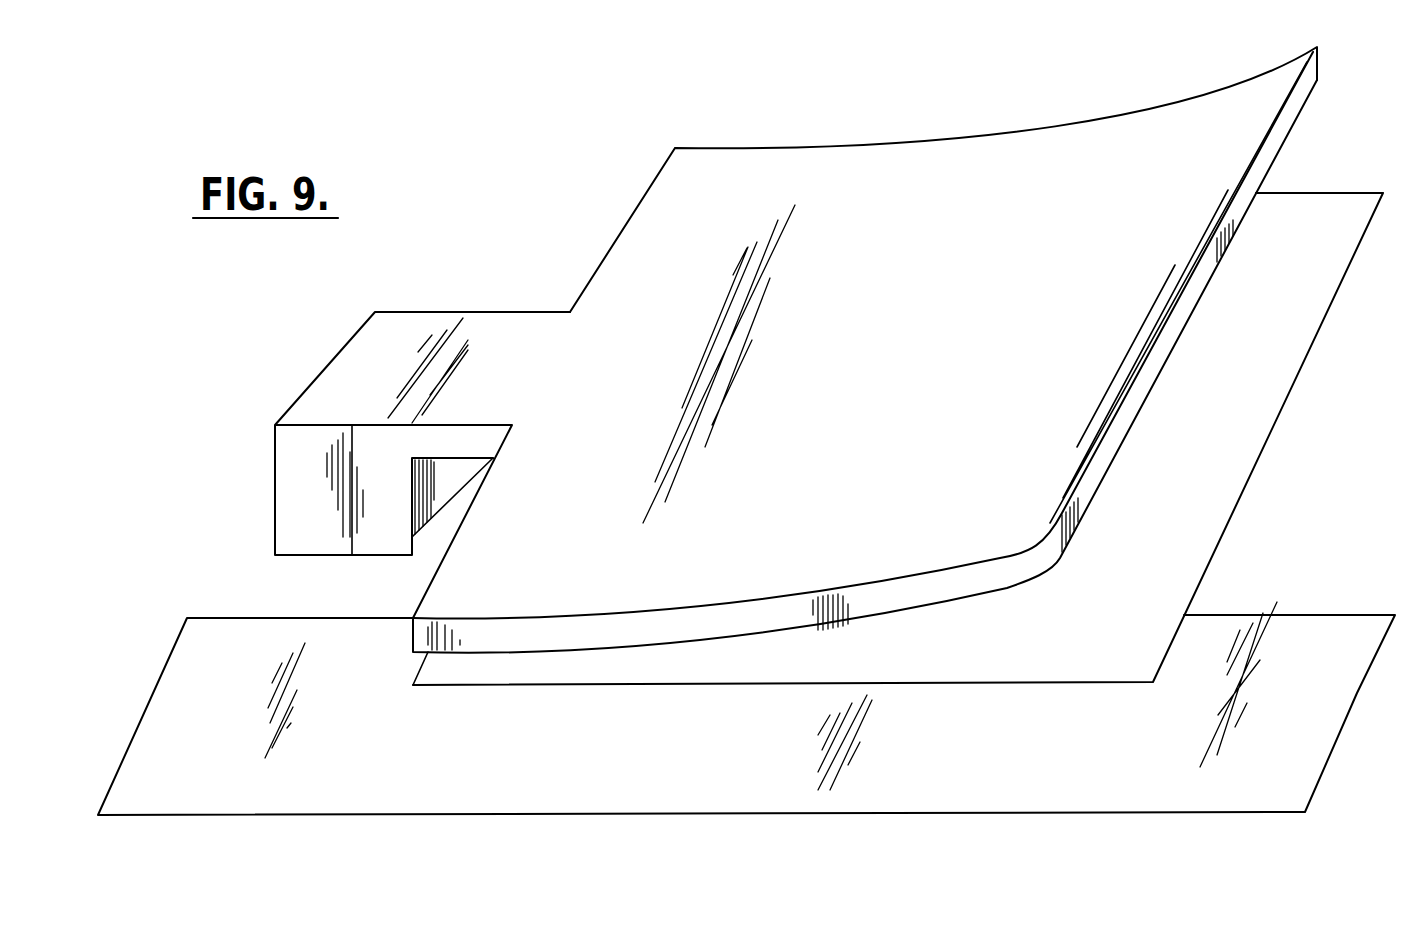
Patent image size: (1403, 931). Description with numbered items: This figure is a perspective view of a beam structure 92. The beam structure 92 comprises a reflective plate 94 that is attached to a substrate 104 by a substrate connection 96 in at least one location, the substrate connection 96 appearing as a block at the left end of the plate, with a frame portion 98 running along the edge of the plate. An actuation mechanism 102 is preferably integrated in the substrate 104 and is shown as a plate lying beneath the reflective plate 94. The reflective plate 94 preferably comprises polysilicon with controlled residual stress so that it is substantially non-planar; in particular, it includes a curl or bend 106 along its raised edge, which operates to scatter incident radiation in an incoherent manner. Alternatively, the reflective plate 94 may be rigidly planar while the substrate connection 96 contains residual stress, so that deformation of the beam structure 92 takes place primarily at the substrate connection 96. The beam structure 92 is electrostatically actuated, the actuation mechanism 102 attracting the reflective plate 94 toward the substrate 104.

The beam structure 92 is at (756, 334).
The reflective plate 94 is at (933, 163).
The substrate connection 96 is at (303, 490).
The frame strip 98 is at (512, 328).
The actuation mechanism 102 is at (1182, 552).
The substrate 104 is at (400, 782).
The curl or bend 106 is at (1228, 52).